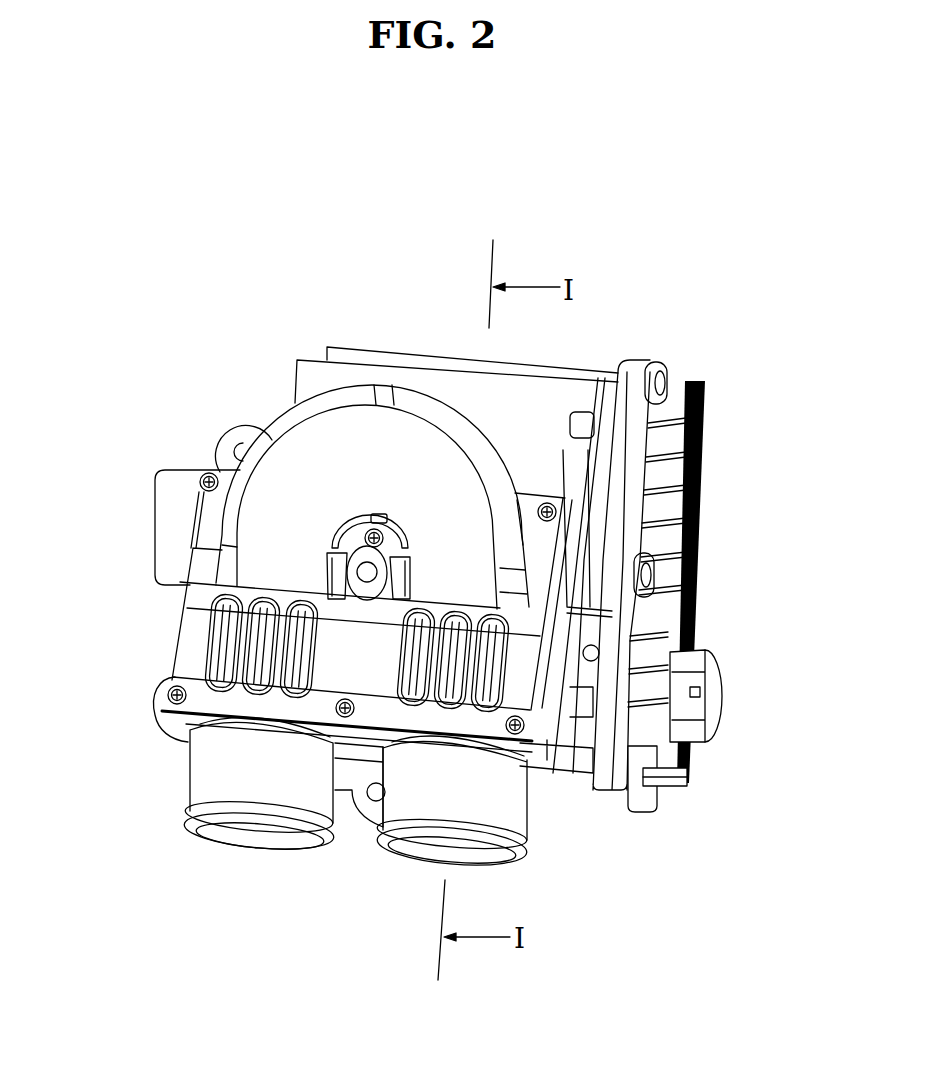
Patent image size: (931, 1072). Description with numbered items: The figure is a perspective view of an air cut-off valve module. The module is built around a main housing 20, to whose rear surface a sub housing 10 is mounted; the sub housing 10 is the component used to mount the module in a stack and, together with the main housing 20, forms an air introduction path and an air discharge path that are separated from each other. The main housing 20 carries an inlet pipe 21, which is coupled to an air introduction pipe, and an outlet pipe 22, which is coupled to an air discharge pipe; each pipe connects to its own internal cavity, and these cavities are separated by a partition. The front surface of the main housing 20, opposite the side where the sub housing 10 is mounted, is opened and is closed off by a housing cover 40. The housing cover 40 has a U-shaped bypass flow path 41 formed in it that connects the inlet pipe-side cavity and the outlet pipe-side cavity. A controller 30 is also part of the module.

The sub housing 10 is at (362, 832).
The main housing 20 is at (403, 343).
The inlet pipe 21 is at (512, 808).
The outlet pipe 22 is at (207, 780).
The controller 30 is at (710, 532).
The housing cover 40 is at (167, 630).
The bypass flow path 41 is at (288, 452).